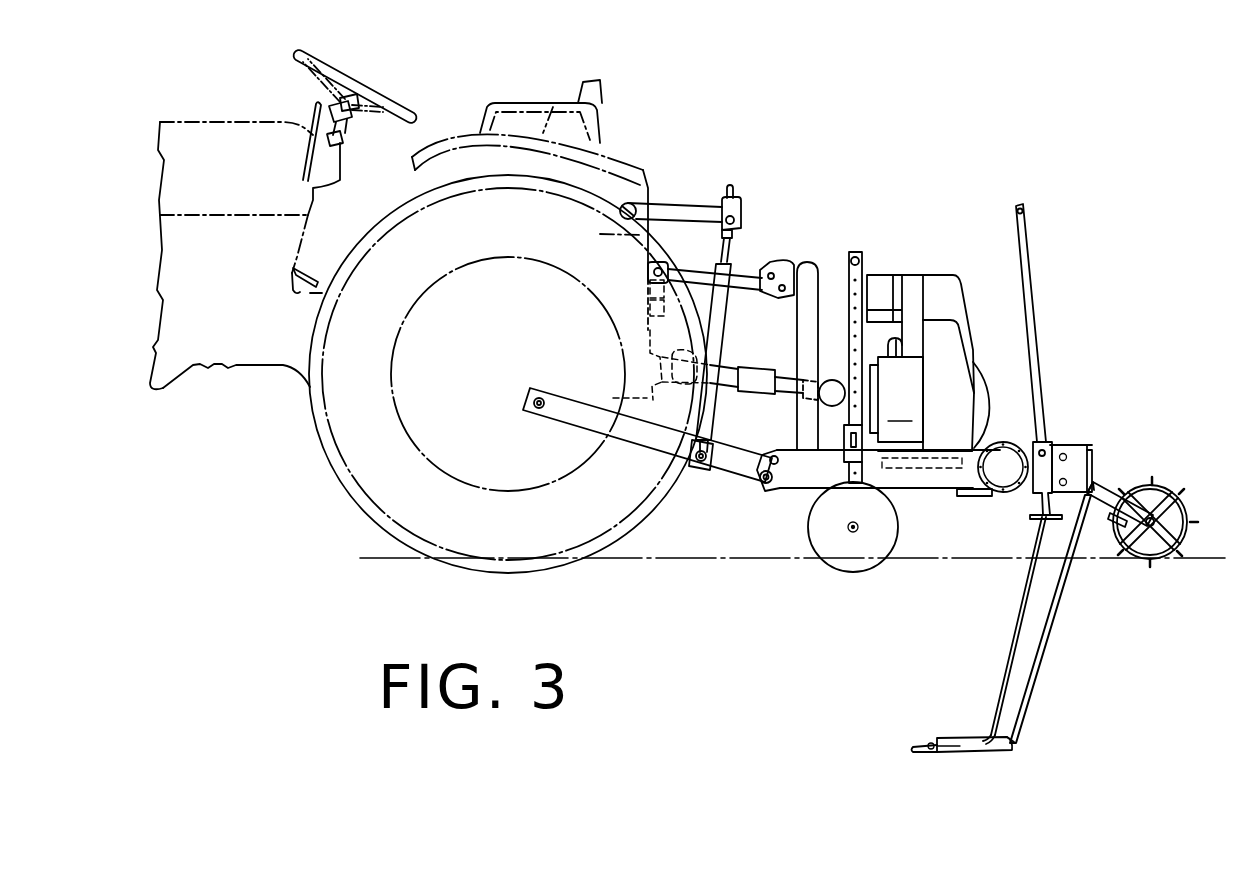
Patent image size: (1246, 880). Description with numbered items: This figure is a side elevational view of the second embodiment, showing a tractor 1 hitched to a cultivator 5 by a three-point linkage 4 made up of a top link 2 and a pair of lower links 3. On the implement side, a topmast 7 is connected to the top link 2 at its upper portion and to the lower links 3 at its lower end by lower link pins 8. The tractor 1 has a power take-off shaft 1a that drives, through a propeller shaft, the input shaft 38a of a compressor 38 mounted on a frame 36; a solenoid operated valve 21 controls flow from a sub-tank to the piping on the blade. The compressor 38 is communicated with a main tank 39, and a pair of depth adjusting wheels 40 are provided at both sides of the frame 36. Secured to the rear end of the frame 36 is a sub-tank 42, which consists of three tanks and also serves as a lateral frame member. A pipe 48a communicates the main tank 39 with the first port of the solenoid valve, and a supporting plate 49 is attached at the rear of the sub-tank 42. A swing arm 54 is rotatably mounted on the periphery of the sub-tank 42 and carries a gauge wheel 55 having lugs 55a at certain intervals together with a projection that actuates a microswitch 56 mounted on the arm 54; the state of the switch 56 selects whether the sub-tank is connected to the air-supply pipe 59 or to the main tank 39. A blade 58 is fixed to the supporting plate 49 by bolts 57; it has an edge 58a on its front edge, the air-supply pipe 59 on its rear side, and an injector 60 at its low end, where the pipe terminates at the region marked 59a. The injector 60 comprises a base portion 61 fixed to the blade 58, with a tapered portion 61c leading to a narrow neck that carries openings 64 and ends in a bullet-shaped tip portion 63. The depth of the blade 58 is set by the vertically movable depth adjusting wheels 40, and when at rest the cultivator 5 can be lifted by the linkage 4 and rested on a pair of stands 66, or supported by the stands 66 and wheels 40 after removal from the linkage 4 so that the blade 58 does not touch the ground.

The tractor 1 is at (438, 113).
The power take-off shaft 1a is at (651, 394).
The top link 2 is at (742, 286).
The lower links 3 is at (746, 461).
The three-point linkage 4 is at (753, 241).
The cultivator 5 is at (972, 265).
The topmast 7 is at (813, 313).
The lower link pins 8 is at (771, 497).
The solenoid operated valve 21 is at (766, 378).
The frame 36 is at (921, 481).
The compressor 38 is at (920, 363).
The input shaft 38a is at (863, 401).
The main tank 39 is at (988, 402).
The depth adjusting wheels 40 is at (888, 538).
The sub-tank 42 is at (1002, 464).
The pipe 48a is at (963, 497).
The supporting plate 49 is at (1088, 457).
The swing arm 54 is at (1105, 493).
The gauge wheel 55 is at (1167, 491).
The lugs 55a is at (1184, 498).
The microswitch 56 is at (1113, 520).
The bolts 57 is at (1066, 453).
The blade 58 is at (1032, 653).
The edge 58a is at (1012, 641).
The air-supply pipe 59 is at (1066, 601).
The beam lower end 59a is at (1020, 747).
The injector 60 is at (961, 711).
The base portion 61 is at (1003, 752).
The tapered portion 61c is at (950, 754).
The tip portion 63 is at (920, 753).
The openings 64 is at (931, 742).
The stands 66 is at (1043, 388).